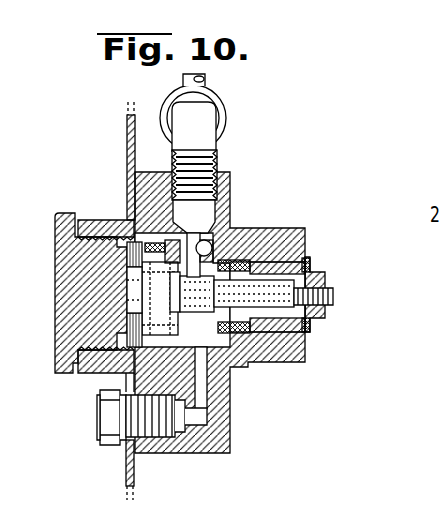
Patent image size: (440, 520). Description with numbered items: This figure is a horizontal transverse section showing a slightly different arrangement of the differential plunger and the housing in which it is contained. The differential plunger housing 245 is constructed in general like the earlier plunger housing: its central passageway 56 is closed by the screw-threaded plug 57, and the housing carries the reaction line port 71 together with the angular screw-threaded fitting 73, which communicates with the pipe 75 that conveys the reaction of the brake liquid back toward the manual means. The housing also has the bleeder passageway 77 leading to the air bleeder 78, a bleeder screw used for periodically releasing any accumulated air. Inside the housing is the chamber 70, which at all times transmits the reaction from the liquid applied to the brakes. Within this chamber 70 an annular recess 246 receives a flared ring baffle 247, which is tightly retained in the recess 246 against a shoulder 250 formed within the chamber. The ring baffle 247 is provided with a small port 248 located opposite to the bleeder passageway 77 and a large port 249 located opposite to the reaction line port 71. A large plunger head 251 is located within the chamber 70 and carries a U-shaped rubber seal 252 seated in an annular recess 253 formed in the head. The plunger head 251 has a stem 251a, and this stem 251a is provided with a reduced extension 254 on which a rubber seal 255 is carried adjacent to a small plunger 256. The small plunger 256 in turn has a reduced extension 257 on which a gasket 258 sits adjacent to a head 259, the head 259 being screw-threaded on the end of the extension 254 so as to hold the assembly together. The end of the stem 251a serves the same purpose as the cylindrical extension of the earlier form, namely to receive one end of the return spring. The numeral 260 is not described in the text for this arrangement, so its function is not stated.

The central passageway 56 is at (120, 246).
The screw-threaded plug 57 is at (70, 291).
The chamber 70 is at (192, 313).
The reaction line port 71 is at (203, 232).
The angular screw-threaded fitting 73 is at (212, 118).
The pipe 75 is at (205, 84).
The bleeder passageway 77 is at (203, 393).
The air bleeder 78 is at (104, 422).
The differential plunger housing 245 is at (98, 224).
The annular recess 246 is at (176, 222).
The flared ring baffle 247 is at (228, 363).
The small port 248 is at (201, 347).
The large port 249 is at (211, 244).
The shoulder 250 is at (200, 343).
The large plunger head 251 is at (137, 290).
The stem 251a is at (119, 301).
The U-shaped rubber seal 252 is at (144, 262).
The annular recess 253 is at (124, 322).
The reduced extension 254 is at (258, 292).
The rubber seal 255 is at (250, 262).
The small plunger 256 is at (305, 240).
The reduced extension 257 is at (323, 283).
The gasket 258 is at (310, 263).
The head 259 is at (312, 313).
The element 260 is at (427, 330).